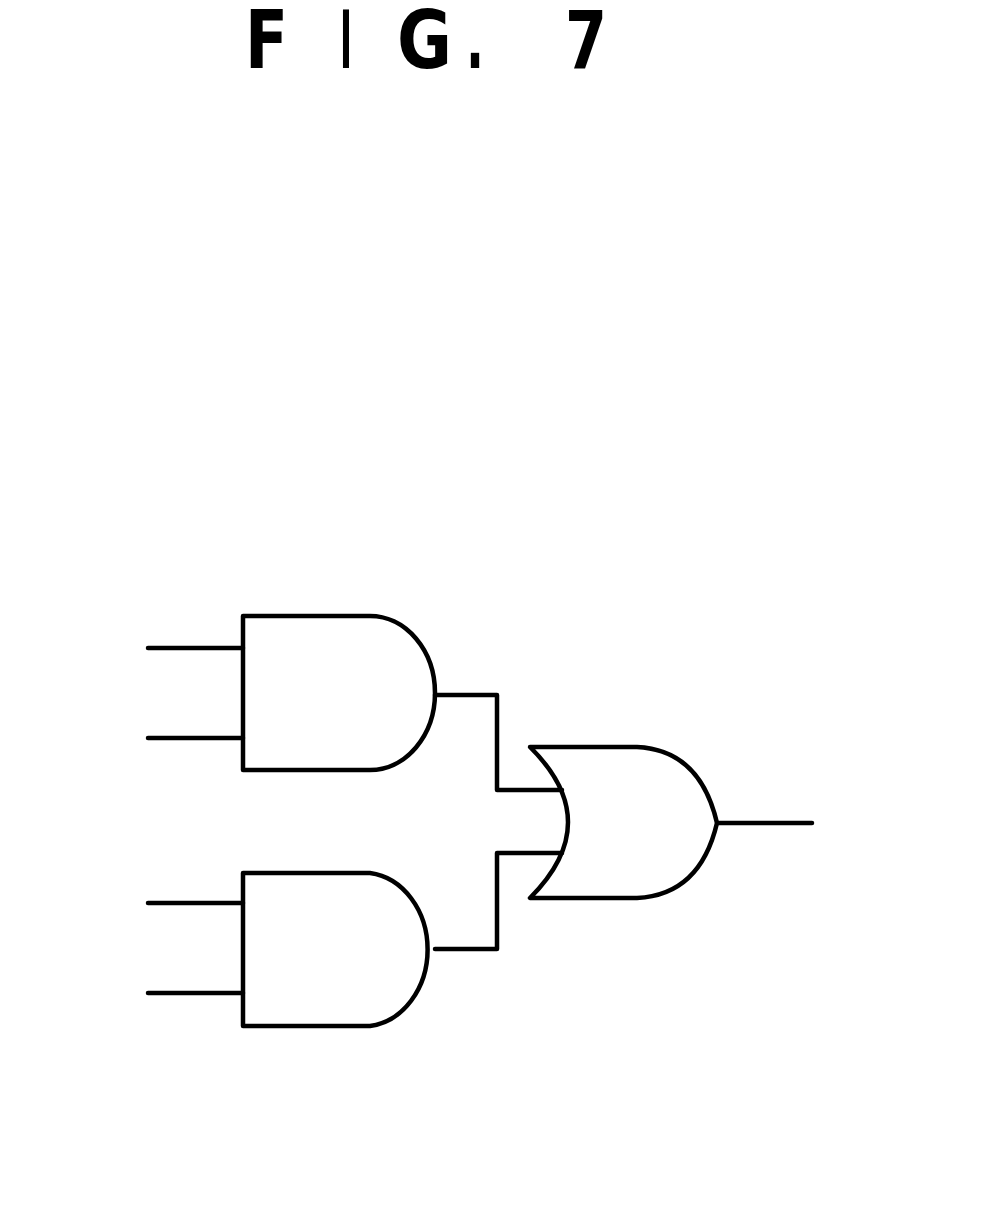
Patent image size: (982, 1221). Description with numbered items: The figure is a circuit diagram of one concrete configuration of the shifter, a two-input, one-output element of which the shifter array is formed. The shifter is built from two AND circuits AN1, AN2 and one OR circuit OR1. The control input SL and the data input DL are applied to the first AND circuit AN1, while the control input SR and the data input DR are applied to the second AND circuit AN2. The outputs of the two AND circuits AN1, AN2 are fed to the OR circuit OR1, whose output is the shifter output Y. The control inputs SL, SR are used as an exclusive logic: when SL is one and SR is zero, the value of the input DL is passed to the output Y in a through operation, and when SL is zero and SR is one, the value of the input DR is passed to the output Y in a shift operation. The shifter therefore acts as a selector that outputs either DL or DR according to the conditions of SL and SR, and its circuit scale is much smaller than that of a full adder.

The AND circuit AN1 is at (370, 613).
The AND circuit AN2 is at (370, 1029).
The OR circuit OR1 is at (635, 743).
The control input SL is at (157, 650).
The input DL is at (157, 738).
The control input SR is at (157, 903).
The input DR is at (157, 993).
The output Y is at (799, 823).